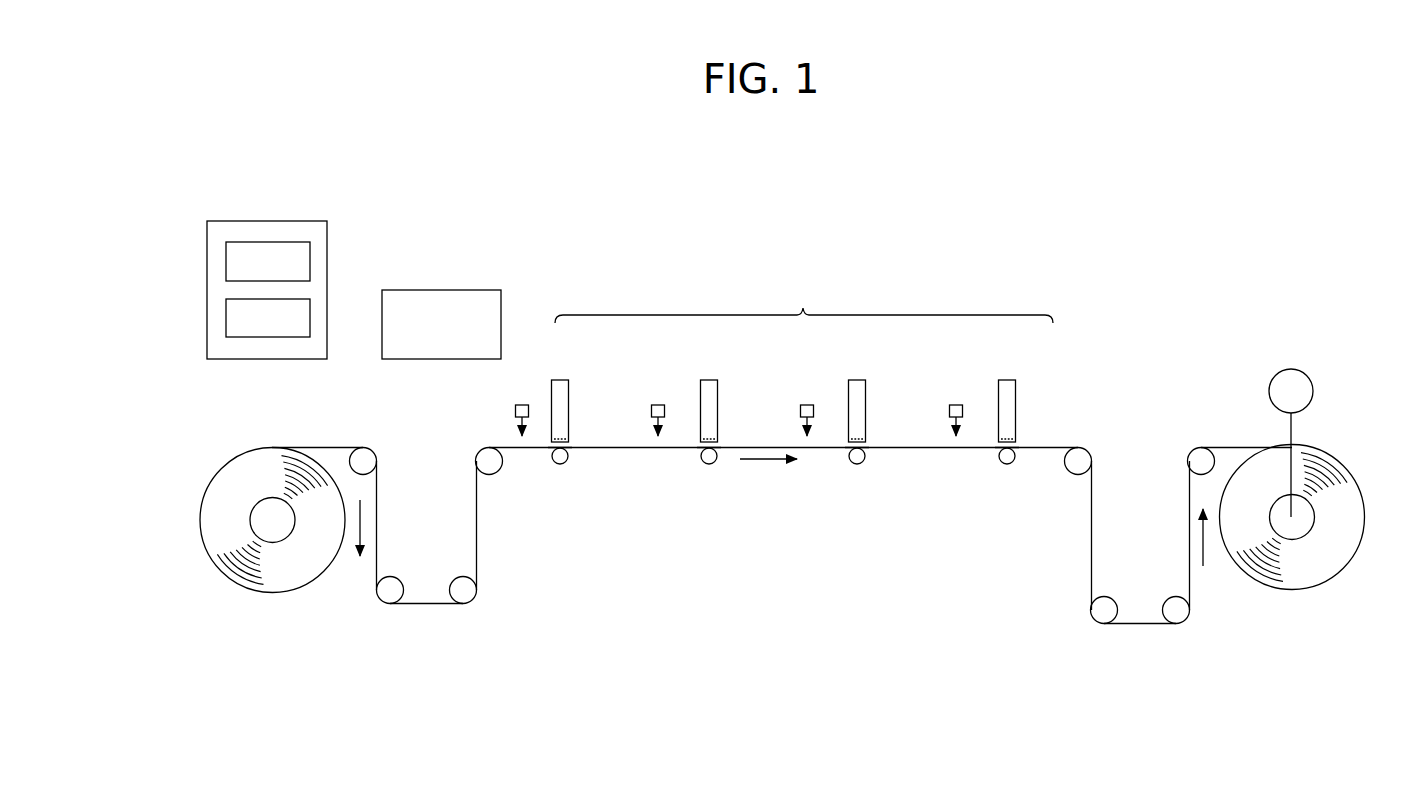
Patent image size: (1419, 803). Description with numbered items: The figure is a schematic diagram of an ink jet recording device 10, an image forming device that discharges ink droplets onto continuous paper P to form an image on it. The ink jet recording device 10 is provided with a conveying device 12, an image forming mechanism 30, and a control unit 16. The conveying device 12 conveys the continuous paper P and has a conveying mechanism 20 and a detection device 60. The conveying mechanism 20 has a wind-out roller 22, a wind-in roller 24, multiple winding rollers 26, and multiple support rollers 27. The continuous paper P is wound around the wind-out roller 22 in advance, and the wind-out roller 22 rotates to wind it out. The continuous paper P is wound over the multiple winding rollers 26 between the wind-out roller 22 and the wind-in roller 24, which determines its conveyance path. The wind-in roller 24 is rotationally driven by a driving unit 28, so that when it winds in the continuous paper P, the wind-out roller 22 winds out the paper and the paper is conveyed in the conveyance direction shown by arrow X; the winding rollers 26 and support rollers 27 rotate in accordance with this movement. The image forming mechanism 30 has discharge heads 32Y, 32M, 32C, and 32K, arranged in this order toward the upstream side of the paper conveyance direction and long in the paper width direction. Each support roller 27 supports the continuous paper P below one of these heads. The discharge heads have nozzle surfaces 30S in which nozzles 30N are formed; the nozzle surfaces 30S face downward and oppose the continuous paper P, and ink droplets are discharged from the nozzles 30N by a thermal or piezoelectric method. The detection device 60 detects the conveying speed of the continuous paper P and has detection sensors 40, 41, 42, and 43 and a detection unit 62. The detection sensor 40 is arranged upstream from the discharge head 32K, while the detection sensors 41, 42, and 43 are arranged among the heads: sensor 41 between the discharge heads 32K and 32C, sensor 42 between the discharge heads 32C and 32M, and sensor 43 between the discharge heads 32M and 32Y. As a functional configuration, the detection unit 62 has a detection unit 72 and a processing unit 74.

The ink jet recording device 10 is at (1229, 255).
The conveying device 12 is at (243, 677).
The control unit 16 is at (479, 296).
The conveying mechanism 20 is at (277, 599).
The wind-out roller 22 is at (270, 512).
The wind-in roller 24 is at (1302, 526).
The winding rollers 26 is at (366, 449).
The support rollers 27 is at (564, 464).
The driving unit 28 is at (1283, 369).
The image forming mechanism 30 is at (817, 363).
The nozzles 30N is at (568, 437).
The nozzle surfaces 30S is at (553, 455).
The discharge head 32K is at (560, 380).
The discharge head 32C is at (709, 380).
The discharge head 32M is at (857, 380).
The discharge head 32Y is at (1007, 380).
The detection sensor 40 is at (522, 405).
The detection sensor 41 is at (658, 405).
The detection sensor 42 is at (807, 405).
The detection sensor 43 is at (956, 405).
The detection device 60 is at (203, 299).
The detection unit 62 is at (304, 221).
The detection unit 72 is at (310, 262).
The processing unit 74 is at (310, 318).
The continuous paper P is at (323, 446).
The arrow X is at (355, 545).